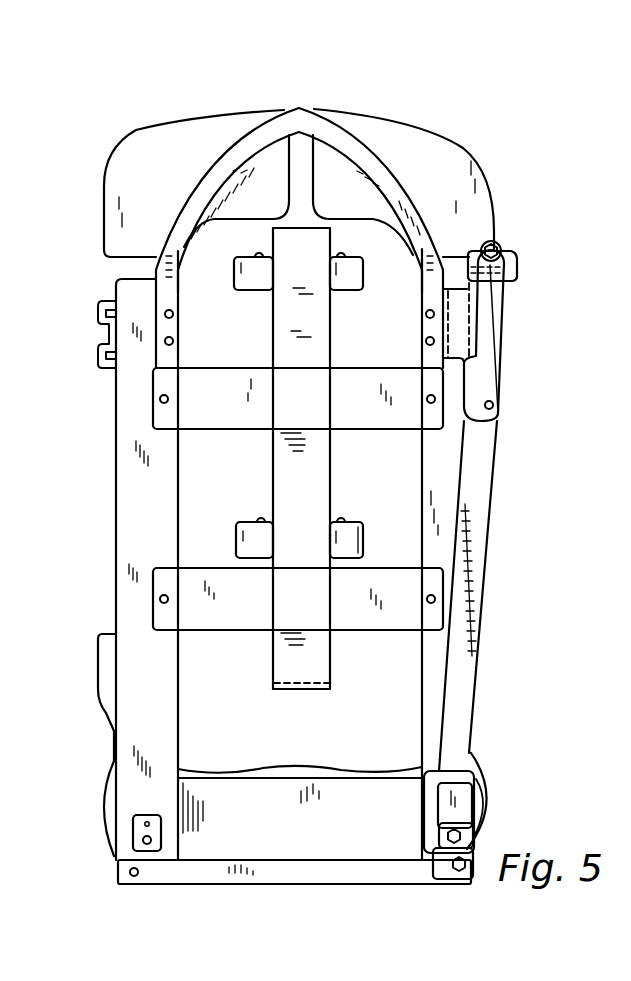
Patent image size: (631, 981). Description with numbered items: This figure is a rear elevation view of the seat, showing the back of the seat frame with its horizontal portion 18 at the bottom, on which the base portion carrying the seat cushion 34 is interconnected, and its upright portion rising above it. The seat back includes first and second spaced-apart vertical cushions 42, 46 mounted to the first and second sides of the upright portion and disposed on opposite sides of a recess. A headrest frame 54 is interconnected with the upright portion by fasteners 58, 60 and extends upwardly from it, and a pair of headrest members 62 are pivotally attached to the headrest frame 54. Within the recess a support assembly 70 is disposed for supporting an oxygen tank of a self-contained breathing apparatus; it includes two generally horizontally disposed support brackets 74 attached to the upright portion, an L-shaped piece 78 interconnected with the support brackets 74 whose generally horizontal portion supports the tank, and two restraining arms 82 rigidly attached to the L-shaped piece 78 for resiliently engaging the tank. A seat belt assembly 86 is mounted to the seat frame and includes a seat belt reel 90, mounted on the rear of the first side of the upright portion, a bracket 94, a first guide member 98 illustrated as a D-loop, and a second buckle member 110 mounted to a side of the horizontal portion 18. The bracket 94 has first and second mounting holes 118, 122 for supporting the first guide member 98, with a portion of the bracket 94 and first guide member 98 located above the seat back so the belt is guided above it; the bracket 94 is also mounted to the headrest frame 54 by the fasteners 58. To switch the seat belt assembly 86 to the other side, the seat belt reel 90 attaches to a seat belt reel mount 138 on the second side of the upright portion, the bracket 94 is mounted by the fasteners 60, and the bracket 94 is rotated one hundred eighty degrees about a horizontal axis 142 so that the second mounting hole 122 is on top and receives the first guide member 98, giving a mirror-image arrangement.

The horizontal portion 18 is at (306, 870).
The seat cushion 34 is at (300, 766).
The first vertical cushion 42 is at (168, 528).
The second vertical cushion 46 is at (455, 478).
The headrest frame 54 is at (306, 106).
The fasteners 58 is at (424, 339).
The fasteners 60 is at (173, 339).
The headrest members 62 is at (196, 131).
The support assembly 70 is at (343, 438).
The support brackets 74 is at (253, 400).
The L-shaped piece 78 is at (294, 678).
The restraining arms 82 is at (342, 281).
The seat belt assembly 86 is at (518, 318).
The seat belt reel 90 is at (468, 778).
The bracket 94 is at (490, 384).
The first guide member 98 is at (515, 272).
The second buckle member 110 is at (108, 638).
The first mounting hole 118 is at (500, 247).
The second mounting hole 122 is at (492, 406).
The seat belt reel mount 138 is at (132, 829).
The horizontal axis 142 is at (458, 323).